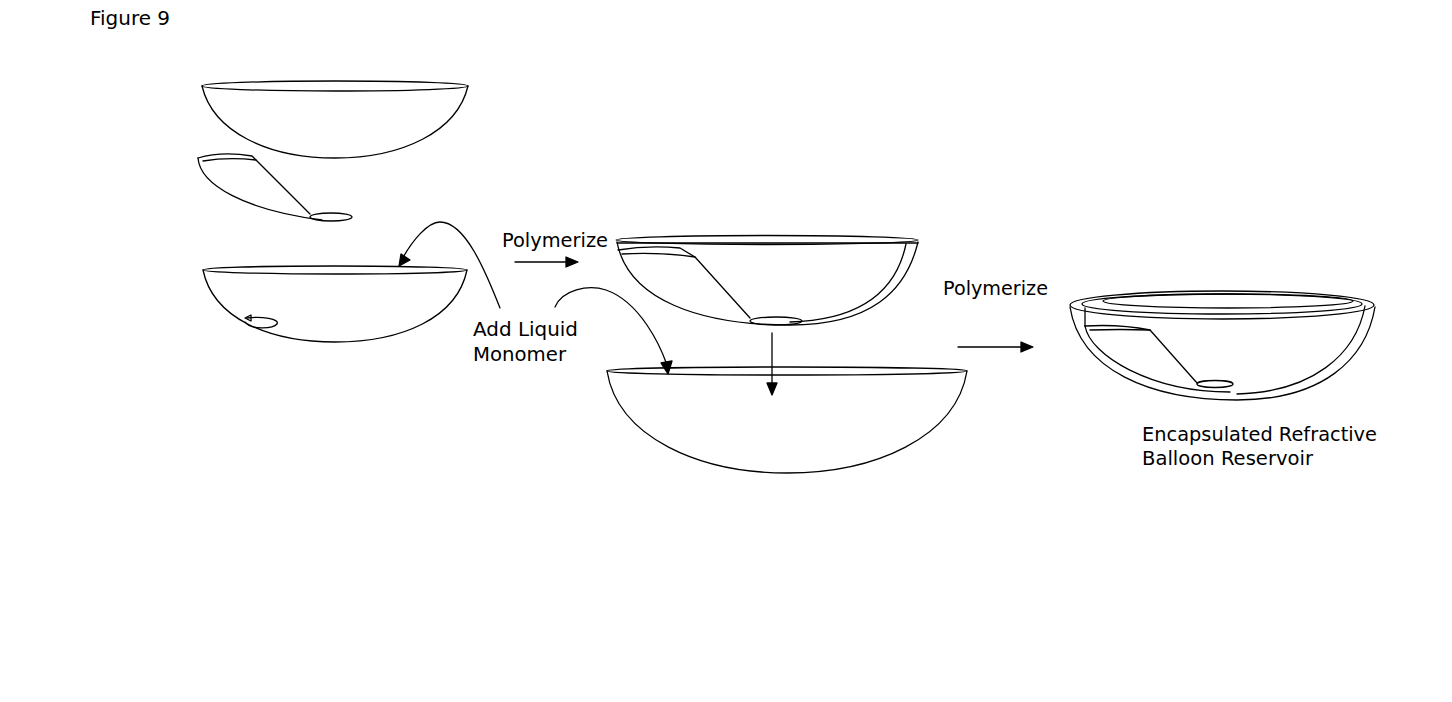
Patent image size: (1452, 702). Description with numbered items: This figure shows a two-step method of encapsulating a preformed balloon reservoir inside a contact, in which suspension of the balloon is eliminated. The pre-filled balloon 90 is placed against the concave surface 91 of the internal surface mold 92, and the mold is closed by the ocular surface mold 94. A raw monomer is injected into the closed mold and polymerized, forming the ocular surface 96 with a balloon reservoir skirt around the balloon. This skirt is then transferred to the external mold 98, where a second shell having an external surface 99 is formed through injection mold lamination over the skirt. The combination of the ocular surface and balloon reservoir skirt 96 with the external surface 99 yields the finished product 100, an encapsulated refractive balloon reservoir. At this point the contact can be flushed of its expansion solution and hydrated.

The pre-filled balloon 90 is at (275, 187).
The concave surface 91 is at (277, 322).
The internal surface mold 92 is at (335, 304).
The ocular surface mold 94 is at (335, 119).
The ocular surface with balloon reservoir skirt 96 is at (803, 256).
The external mold 98 is at (787, 420).
The external surface 99 is at (1340, 367).
The finished product 100 is at (1219, 343).